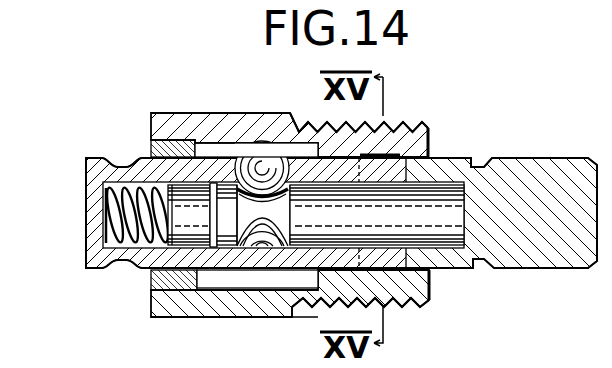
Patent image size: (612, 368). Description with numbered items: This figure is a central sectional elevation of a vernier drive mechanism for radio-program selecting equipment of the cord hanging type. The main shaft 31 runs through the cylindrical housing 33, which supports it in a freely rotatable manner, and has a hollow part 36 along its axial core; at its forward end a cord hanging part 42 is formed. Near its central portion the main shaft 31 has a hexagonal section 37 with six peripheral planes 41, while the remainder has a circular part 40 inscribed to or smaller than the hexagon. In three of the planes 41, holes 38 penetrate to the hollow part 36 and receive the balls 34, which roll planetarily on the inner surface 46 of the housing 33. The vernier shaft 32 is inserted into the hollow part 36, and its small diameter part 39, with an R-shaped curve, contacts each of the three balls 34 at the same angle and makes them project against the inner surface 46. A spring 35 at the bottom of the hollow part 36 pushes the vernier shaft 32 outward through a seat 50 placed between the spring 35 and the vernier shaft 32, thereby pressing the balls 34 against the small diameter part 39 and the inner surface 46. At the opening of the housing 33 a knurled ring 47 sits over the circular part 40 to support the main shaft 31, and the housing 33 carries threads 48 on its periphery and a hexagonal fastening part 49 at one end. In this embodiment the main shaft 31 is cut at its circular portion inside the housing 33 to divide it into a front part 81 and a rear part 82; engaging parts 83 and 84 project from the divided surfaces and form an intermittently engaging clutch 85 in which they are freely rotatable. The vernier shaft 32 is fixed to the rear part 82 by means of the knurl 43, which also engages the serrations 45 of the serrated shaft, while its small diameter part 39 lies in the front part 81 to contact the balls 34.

The main shaft 31 is at (86, 163).
The vernier shaft 32 is at (346, 286).
The cylindrical housing 33 is at (153, 118).
The balls 34 is at (240, 141).
The spring 35 is at (104, 210).
The hollow part 36 is at (106, 248).
The hexagonal section 37 is at (211, 150).
The holes 38 is at (282, 146).
The small diameter part 39 is at (263, 248).
The circular part 40 is at (162, 261).
The peripheral planes 41 is at (186, 290).
The cord hanging part 42 is at (120, 167).
The knurl 43 is at (477, 262).
The serrations 45 is at (528, 172).
The inner surface 46 is at (228, 282).
The knurled ring 47 is at (170, 150).
The threads 48 is at (396, 306).
The hexagonal fastening part 49 is at (304, 115).
The seat 50 is at (124, 261).
The front part 81 is at (309, 292).
The rear part 82 is at (466, 166).
The engaging part 83 is at (430, 150).
The engaging part 84 is at (408, 286).
The clutch 85 is at (386, 152).